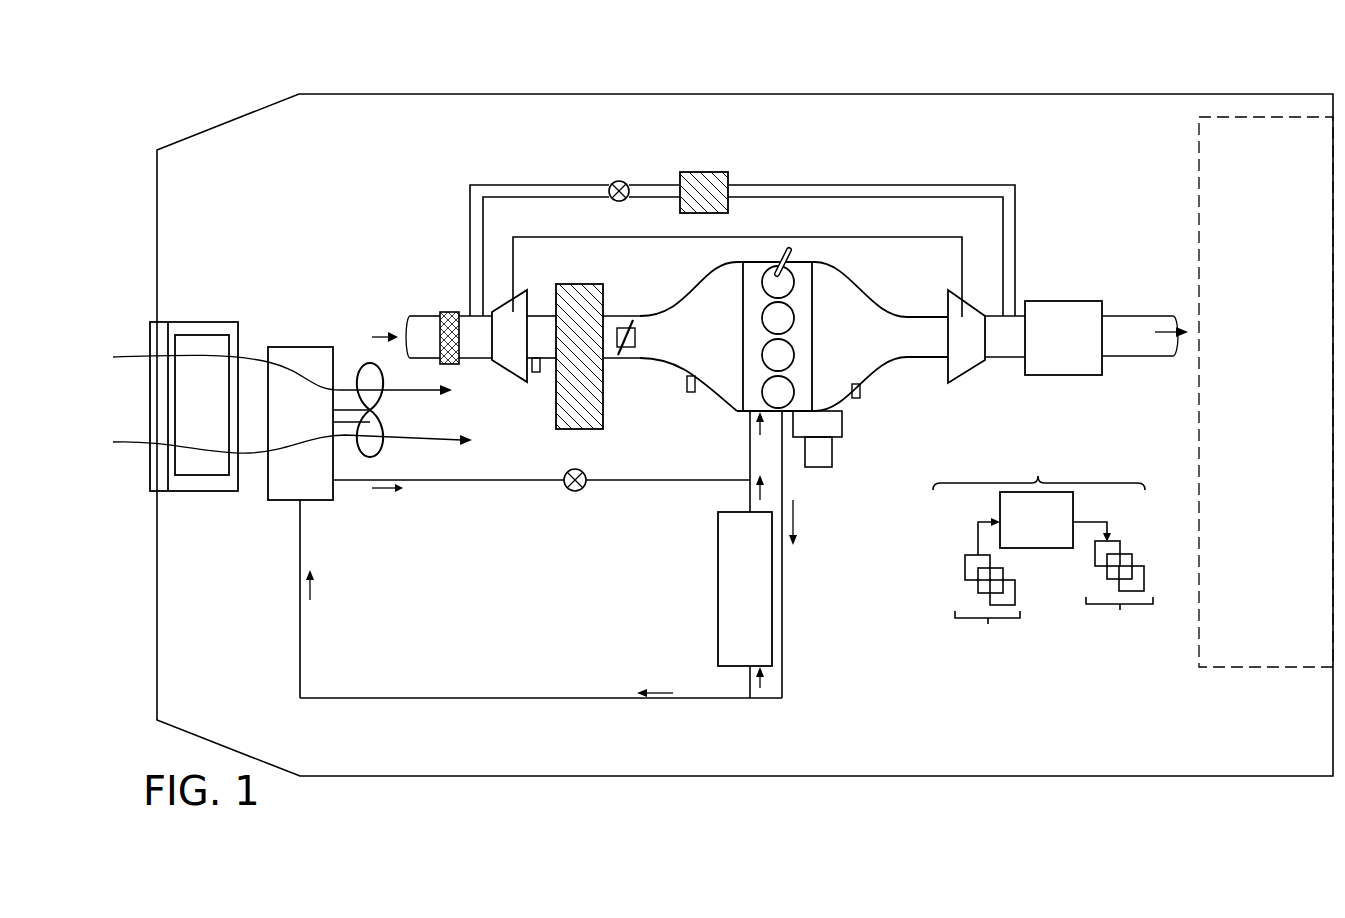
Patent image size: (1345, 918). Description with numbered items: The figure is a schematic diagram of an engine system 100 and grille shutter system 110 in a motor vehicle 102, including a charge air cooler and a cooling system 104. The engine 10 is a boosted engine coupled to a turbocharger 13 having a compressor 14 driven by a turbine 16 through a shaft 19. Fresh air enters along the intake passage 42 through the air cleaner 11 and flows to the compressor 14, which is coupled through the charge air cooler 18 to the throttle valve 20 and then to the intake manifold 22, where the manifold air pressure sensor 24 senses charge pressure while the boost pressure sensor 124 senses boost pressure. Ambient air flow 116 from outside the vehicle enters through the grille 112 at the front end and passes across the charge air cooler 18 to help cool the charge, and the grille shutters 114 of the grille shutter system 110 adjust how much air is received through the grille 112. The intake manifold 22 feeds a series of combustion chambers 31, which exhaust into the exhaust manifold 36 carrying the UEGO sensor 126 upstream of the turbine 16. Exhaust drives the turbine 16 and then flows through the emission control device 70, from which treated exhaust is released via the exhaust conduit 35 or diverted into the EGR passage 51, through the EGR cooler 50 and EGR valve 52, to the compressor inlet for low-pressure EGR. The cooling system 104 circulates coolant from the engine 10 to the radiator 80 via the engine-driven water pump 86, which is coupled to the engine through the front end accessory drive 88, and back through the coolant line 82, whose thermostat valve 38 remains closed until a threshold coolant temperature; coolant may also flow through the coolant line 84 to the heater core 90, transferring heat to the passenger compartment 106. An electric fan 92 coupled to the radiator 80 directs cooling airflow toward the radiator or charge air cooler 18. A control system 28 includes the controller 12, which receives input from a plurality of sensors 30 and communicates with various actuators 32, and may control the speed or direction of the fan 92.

The engine 10 is at (812, 322).
The air cleaner 11 is at (450, 312).
The controller 12 is at (1026, 531).
The turbocharger 13 is at (564, 264).
The compressor 14 is at (500, 347).
The turbine 16 is at (956, 347).
The charge air cooler 18 is at (578, 284).
The shaft 19 is at (889, 240).
The throttle valve 20 is at (635, 340).
The intake manifold 22 is at (701, 346).
The manifold air pressure sensor 24 is at (687, 380).
The control system 28 is at (1039, 459).
The sensors 30 is at (989, 590).
The combustion chambers 31 is at (786, 276).
The actuators 32 is at (1123, 581).
The exhaust conduit 35 is at (1160, 318).
The exhaust manifold 36 is at (852, 346).
The thermostat valve 38 is at (586, 492).
The intake passage 42 is at (441, 364).
The EGR cooler 50 is at (708, 175).
The EGR passage 51 is at (806, 190).
The EGR valve 52 is at (624, 186).
The emission control device 70 is at (1054, 301).
The radiator 80 is at (290, 433).
The coolant line 82 is at (660, 478).
The coolant line 84 is at (749, 505).
The engine-driven water pump 86 is at (832, 462).
The front end accessory drive 88 is at (842, 422).
The heater core 90 is at (735, 599).
The electric fan 92 is at (376, 452).
The engine system 100 is at (1095, 143).
The motor vehicle 102 is at (718, 94).
The cooling system 104 is at (826, 620).
The passenger compartment 106 is at (1266, 392).
The grille shutter system 110 is at (192, 492).
The grille 112 is at (150, 468).
The grille shutters 114 is at (190, 416).
The ambient air flow 116 is at (135, 356).
The boost pressure sensor 124 is at (540, 372).
The UEGO sensor 126 is at (860, 390).